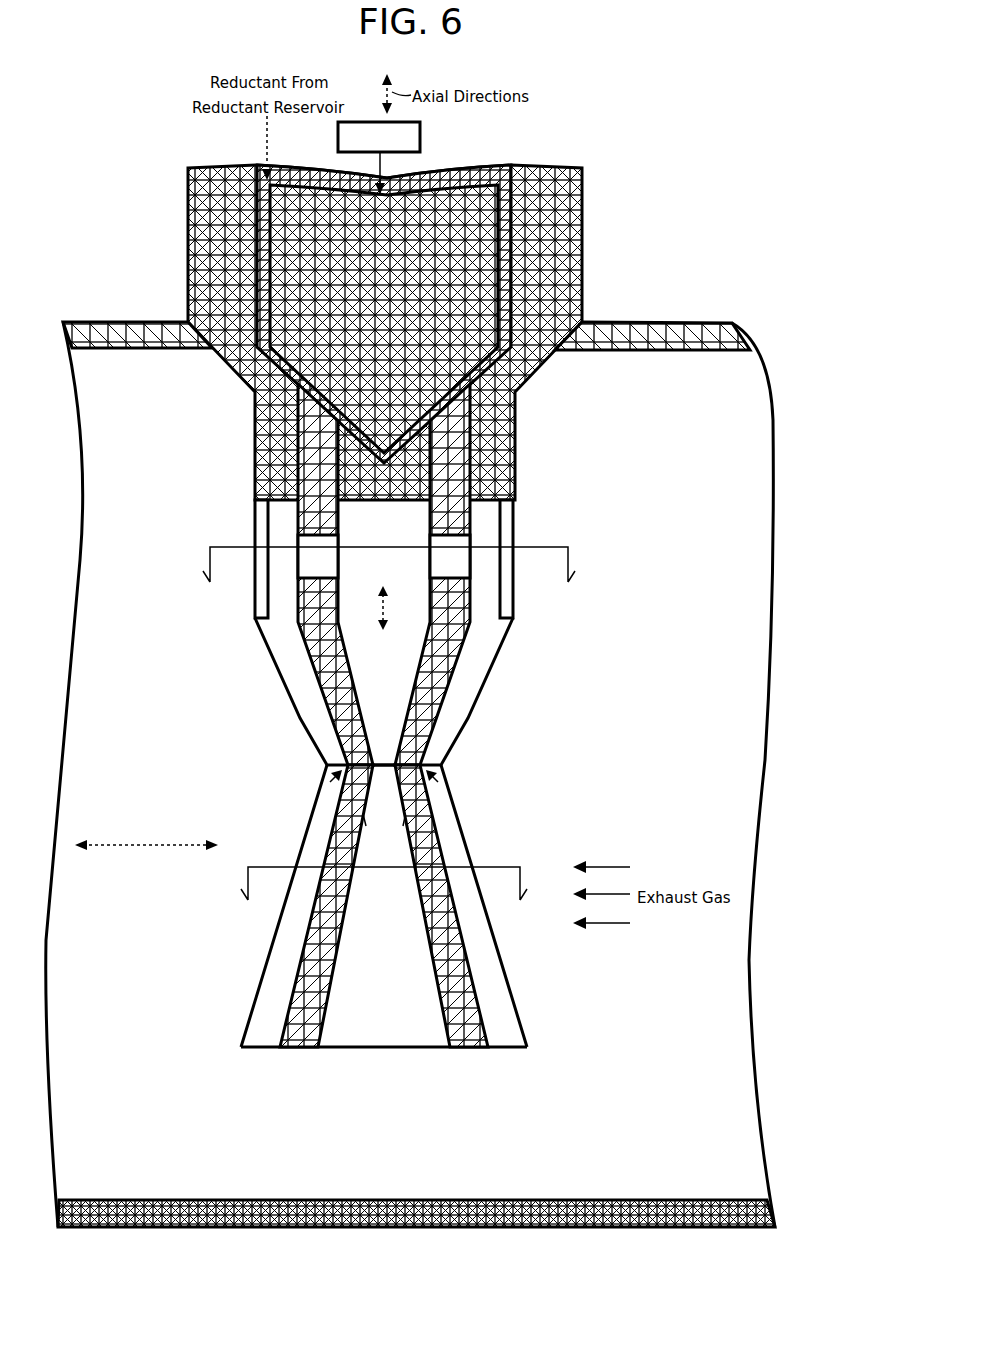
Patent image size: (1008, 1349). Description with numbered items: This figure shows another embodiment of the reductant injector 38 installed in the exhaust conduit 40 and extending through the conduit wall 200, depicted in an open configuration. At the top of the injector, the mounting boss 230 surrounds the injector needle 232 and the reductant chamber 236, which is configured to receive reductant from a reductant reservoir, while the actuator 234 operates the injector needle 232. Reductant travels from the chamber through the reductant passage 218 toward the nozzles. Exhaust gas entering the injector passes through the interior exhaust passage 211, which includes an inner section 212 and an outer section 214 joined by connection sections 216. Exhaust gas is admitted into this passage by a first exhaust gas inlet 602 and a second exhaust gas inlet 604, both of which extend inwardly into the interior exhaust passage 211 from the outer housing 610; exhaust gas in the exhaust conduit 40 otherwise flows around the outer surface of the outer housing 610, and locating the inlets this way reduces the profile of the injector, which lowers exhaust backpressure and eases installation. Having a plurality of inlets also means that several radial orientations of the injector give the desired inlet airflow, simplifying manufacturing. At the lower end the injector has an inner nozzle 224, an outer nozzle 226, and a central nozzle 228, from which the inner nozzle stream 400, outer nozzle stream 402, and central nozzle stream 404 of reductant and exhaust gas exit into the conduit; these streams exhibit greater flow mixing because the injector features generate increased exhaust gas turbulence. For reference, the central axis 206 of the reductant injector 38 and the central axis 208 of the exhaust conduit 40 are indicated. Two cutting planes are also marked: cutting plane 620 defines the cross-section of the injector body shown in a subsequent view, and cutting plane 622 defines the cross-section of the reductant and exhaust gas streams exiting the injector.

The reductant injector 38 is at (690, 198).
The exhaust conduit 40 is at (654, 795).
The conduit wall 200 is at (642, 333).
The central axis of the reductant injector 206 is at (387, 618).
The central axis of the exhaust conduit 208 is at (153, 845).
The interior exhaust passage 211 is at (487, 683).
The inner section 212 is at (402, 661).
The outer section 214 is at (302, 646).
The connection sections 216 is at (337, 573).
The reductant passage 218 is at (457, 648).
The inner nozzle 224 is at (390, 791).
The outer nozzle 226 is at (330, 782).
The central nozzle 228 is at (384, 803).
The mounting boss 230 is at (203, 265).
The injector needle 232 is at (402, 286).
The actuator 234 is at (420, 149).
The reductant chamber 236 is at (505, 215).
The inner nozzle stream 400 is at (385, 933).
The outer nozzle stream 402 is at (260, 1035).
The central nozzle stream 404 is at (300, 1035).
The first exhaust gas inlet 602 is at (508, 520).
The second exhaust gas inlet 604 is at (262, 520).
The outer housing 610 is at (509, 627).
The cutting plane 620 is at (248, 547).
The cutting plane 622 is at (285, 867).